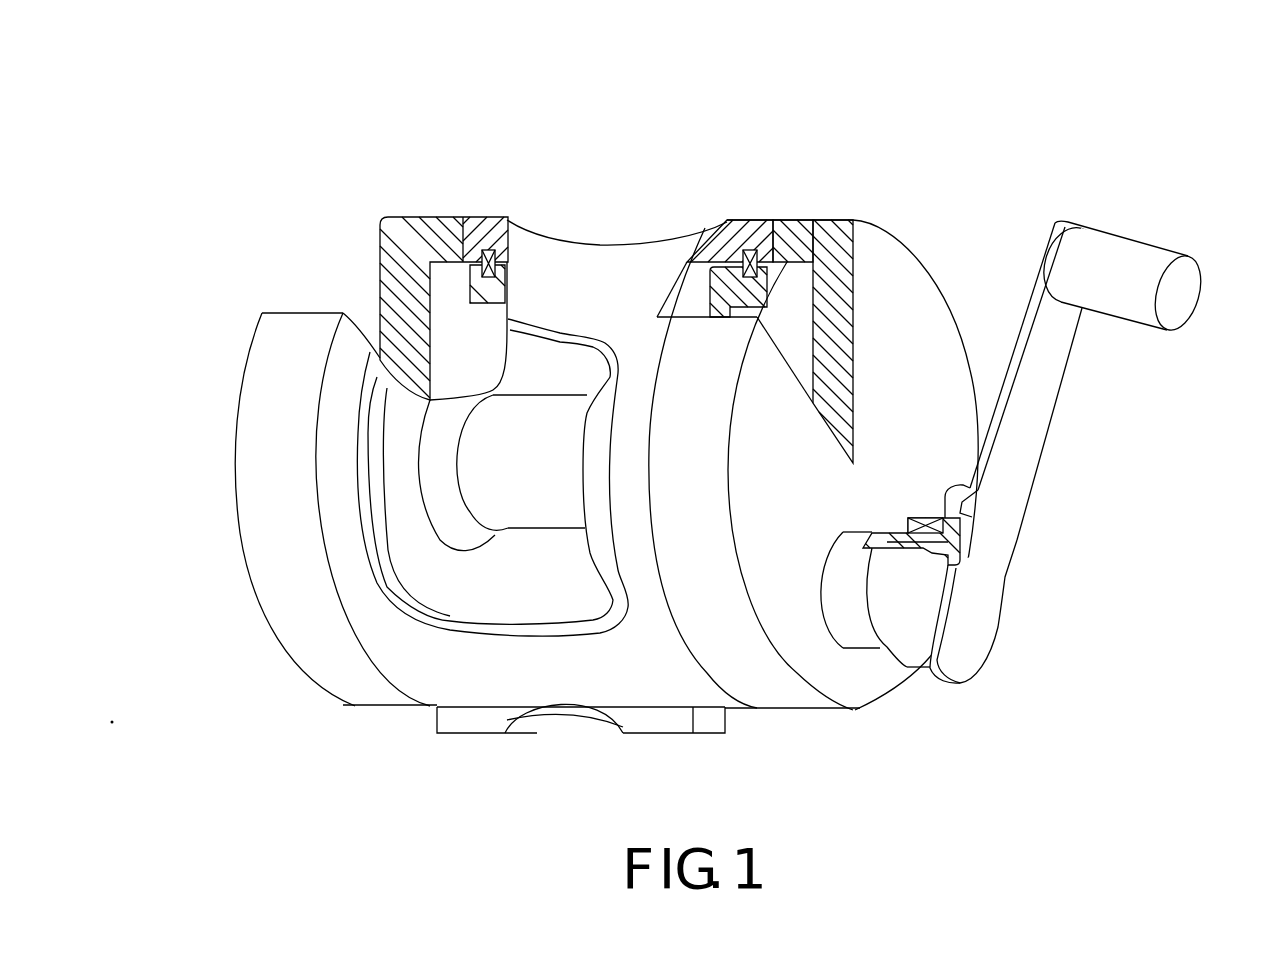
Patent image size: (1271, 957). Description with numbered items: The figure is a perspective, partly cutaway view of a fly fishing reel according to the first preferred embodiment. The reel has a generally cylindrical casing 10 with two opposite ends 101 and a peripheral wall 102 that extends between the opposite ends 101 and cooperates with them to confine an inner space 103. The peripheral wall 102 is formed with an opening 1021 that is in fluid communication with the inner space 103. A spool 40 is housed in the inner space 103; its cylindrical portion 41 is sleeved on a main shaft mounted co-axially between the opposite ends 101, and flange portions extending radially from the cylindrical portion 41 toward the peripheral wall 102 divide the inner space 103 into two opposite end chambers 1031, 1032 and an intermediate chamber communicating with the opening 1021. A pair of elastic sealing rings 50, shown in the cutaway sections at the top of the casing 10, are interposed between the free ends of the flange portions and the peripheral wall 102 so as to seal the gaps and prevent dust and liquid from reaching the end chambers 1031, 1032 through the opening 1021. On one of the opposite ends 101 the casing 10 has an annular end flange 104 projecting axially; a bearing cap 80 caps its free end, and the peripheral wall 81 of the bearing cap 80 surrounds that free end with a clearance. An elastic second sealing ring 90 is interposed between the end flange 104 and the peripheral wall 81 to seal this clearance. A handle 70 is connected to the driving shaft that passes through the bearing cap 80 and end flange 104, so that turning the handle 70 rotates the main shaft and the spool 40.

The casing 10 is at (583, 243).
The opposite ends 101 is at (237, 483).
The peripheral wall 102 is at (641, 262).
The opening 1021 is at (570, 320).
The inner space 103 is at (557, 613).
The end chamber 1031 is at (452, 340).
The end chamber 1032 is at (797, 313).
The annular end flange 104 is at (863, 637).
The spool 40 is at (512, 531).
The cylindrical portion 41 is at (528, 532).
The elastic sealing rings 50 is at (487, 257).
The handle 70 is at (1048, 433).
The bearing cap 80 is at (1005, 631).
The peripheral wall 81 is at (963, 484).
The elastic second sealing ring 90 is at (921, 519).